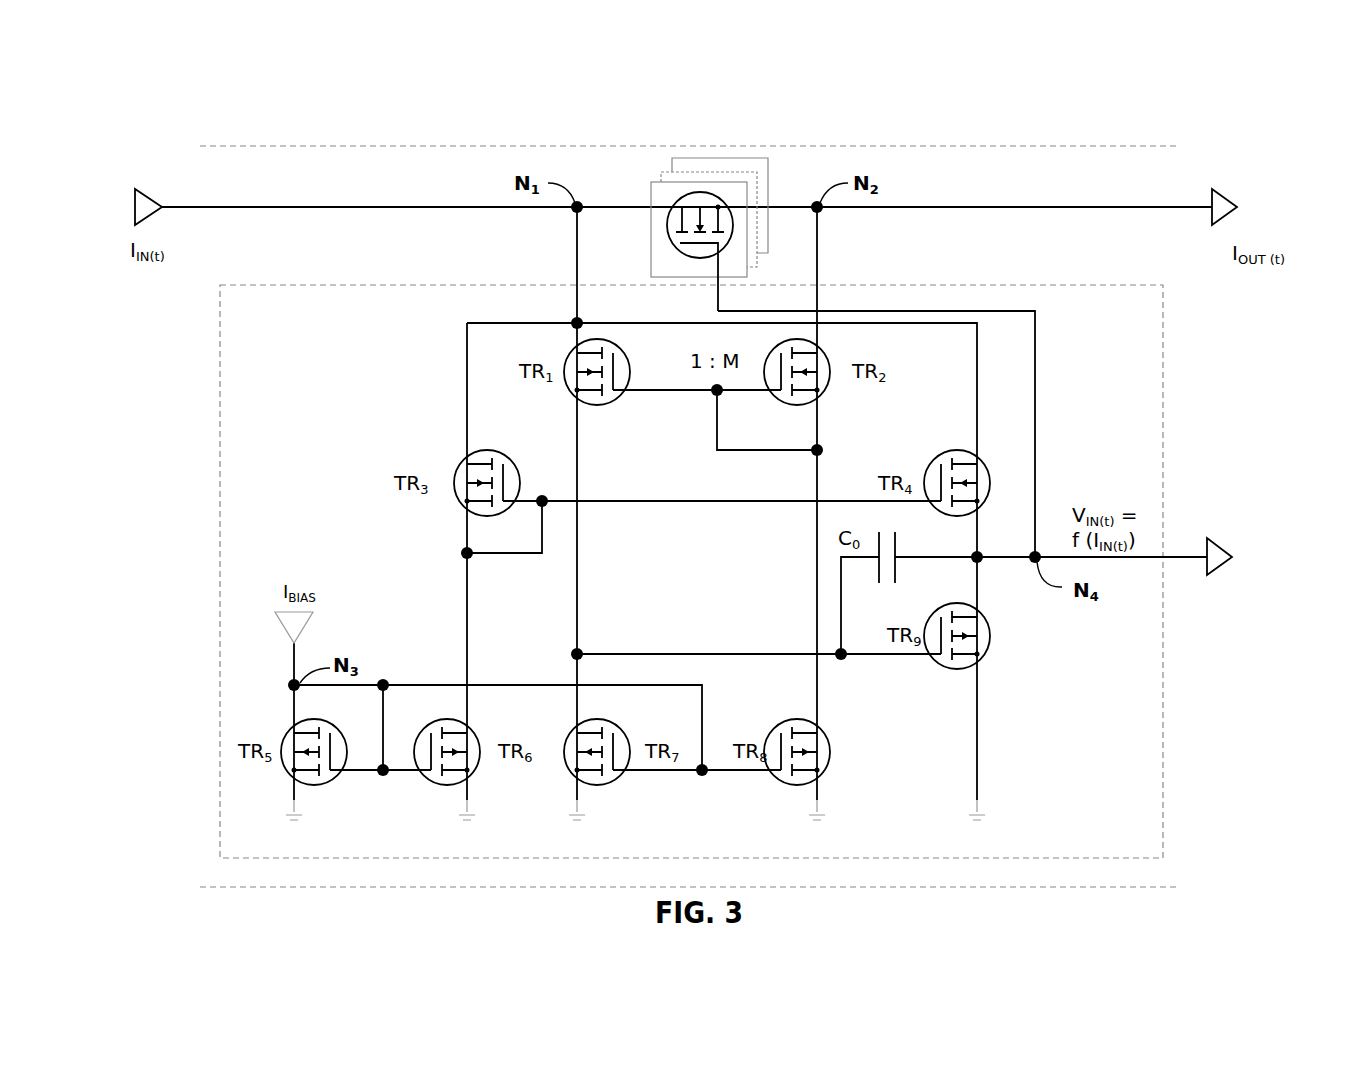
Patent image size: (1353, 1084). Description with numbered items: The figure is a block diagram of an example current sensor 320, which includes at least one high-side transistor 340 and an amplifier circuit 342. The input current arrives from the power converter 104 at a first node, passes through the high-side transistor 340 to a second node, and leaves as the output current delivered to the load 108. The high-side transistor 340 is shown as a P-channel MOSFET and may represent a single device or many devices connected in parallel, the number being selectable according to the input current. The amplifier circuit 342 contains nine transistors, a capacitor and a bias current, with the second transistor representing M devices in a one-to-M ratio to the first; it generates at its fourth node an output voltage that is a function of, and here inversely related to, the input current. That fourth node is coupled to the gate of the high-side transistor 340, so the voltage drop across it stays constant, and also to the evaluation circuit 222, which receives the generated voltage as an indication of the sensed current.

The power converter 104 is at (155, 150).
The load 108 is at (1257, 189).
The evaluation circuit 222 is at (1257, 541).
The current sensor 320 is at (560, 146).
The high-side transistor 340 is at (722, 158).
The amplifier circuit 342 is at (348, 285).